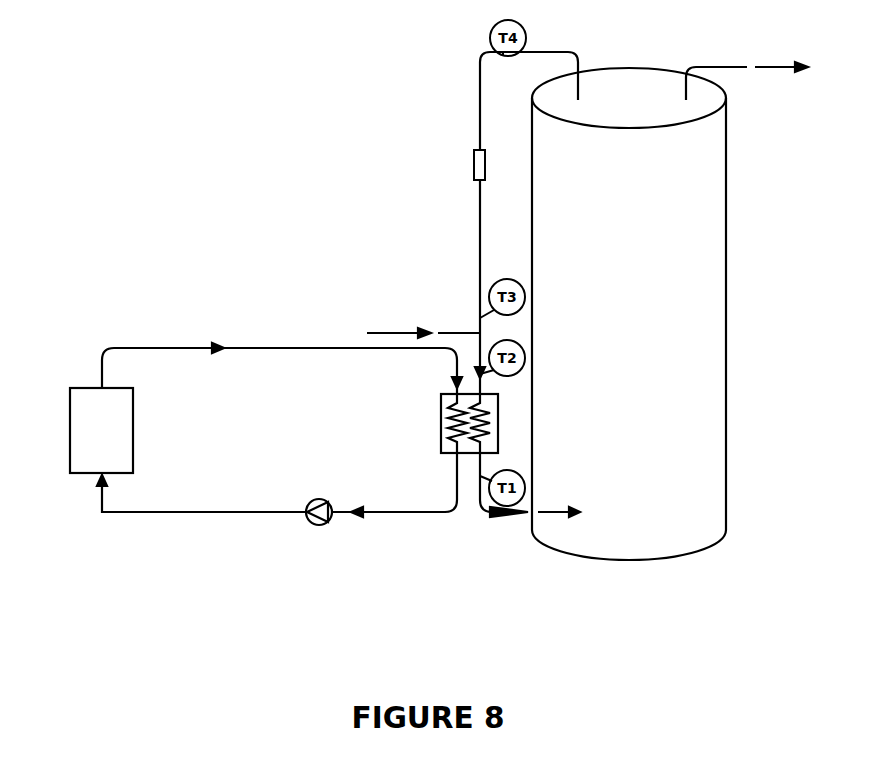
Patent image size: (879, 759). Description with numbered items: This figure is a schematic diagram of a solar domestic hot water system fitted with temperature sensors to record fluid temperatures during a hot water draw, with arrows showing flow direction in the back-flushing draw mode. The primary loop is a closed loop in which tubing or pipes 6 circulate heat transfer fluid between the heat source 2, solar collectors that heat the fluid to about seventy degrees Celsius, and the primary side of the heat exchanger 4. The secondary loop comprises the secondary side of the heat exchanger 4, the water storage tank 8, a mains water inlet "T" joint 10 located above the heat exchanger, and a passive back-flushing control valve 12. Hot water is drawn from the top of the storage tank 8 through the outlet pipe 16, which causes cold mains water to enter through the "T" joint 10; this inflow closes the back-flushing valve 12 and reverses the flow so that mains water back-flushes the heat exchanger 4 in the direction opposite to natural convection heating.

The heat source 2 is at (70, 430).
The heat exchanger 4 is at (440, 425).
The tubing or pipes 6 is at (302, 347).
The water storage tank 8 is at (727, 200).
The "T" joint 10 is at (460, 333).
The back-flushing control valve 12 is at (476, 162).
The pipe or tube 16 is at (697, 65).